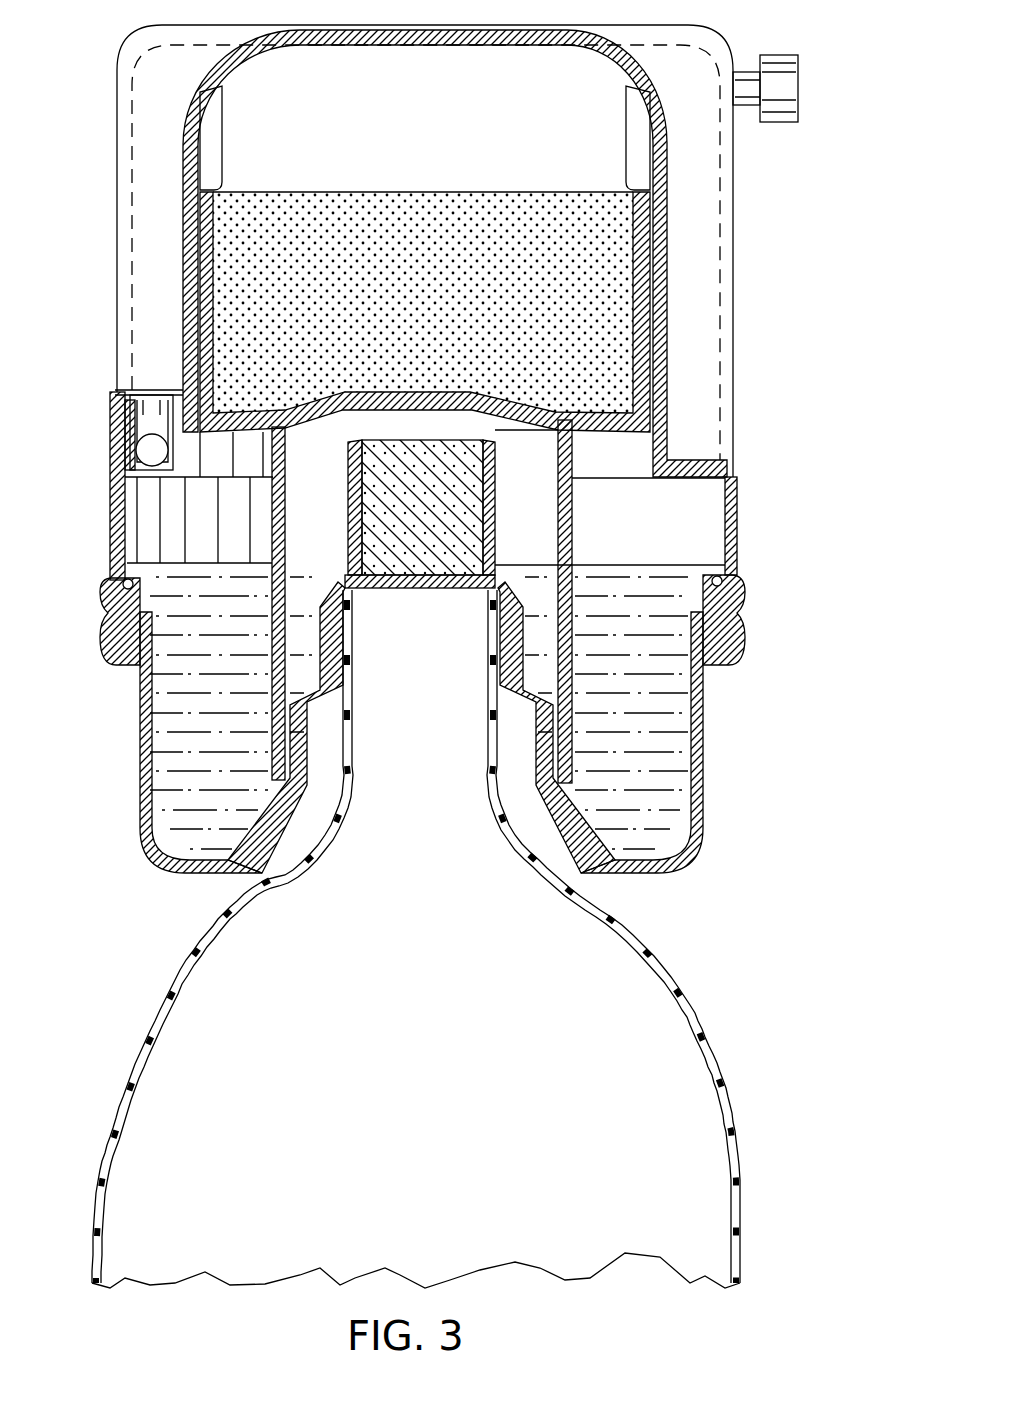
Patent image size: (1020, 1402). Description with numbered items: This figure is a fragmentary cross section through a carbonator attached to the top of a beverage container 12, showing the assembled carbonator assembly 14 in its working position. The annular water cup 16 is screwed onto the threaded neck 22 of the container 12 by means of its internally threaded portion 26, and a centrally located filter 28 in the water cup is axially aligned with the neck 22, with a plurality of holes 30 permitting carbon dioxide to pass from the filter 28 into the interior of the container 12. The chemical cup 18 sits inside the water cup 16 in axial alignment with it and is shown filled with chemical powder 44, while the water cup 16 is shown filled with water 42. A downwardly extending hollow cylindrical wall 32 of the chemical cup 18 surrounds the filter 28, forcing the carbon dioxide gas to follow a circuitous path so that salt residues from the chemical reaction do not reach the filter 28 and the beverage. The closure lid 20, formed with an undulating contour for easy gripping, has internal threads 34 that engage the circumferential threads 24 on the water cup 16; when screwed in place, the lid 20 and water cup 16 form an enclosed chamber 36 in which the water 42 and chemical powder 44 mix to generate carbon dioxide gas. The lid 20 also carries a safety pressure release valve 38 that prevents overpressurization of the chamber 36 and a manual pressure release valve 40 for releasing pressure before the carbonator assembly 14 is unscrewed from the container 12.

The beverage container 12 is at (688, 996).
The carbonator assembly 14 is at (790, 200).
The water cup 16 is at (458, 725).
The chemical cup 18 is at (650, 297).
The closure lid 20 is at (740, 430).
The threaded neck 22 is at (355, 655).
The circumferential threads 24 is at (742, 608).
The internally threaded portion 26 is at (500, 668).
The filter 28 is at (470, 512).
The holes 30 is at (456, 592).
The hollow cylindrical wall 32 is at (573, 530).
The internal threads 34 is at (745, 656).
The enclosed chamber 36 is at (442, 131).
The safety pressure release valve 38 is at (140, 452).
The manual pressure release valve 40 is at (793, 12).
The water 42 is at (685, 565).
The chemical powder 44 is at (345, 190).